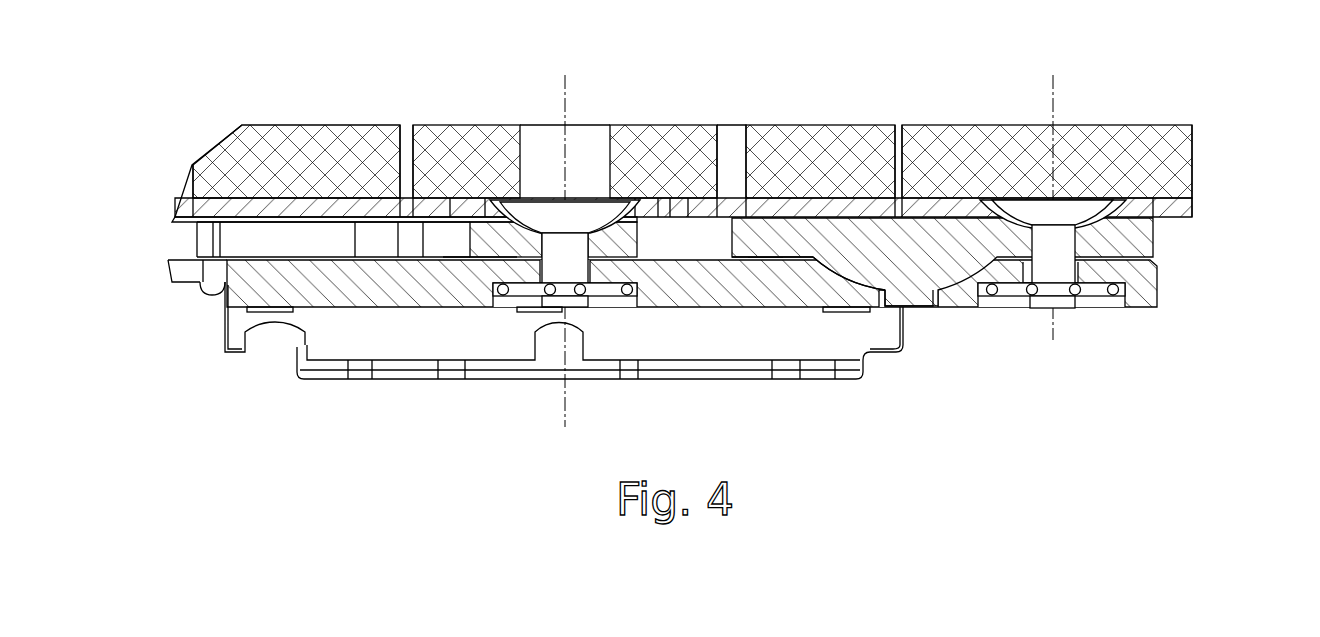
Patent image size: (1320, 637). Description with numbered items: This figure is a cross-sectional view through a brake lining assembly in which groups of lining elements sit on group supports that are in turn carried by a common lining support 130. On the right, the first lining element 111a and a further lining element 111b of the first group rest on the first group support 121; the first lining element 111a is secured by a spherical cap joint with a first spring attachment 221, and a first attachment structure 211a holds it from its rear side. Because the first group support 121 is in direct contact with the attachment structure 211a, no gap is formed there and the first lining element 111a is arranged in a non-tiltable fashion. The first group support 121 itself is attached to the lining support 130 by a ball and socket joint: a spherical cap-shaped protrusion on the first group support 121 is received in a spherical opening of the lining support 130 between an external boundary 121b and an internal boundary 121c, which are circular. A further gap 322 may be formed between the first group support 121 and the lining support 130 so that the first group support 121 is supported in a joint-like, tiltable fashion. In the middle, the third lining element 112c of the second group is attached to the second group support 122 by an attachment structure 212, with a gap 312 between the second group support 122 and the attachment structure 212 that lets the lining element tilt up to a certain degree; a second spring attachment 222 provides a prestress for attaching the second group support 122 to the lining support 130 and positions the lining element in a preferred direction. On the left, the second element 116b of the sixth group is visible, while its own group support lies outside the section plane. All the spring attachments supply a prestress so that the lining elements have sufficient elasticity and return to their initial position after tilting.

The first lining element 111a is at (1165, 150).
The lining element of the first group 111b is at (830, 138).
The third lining element 112c is at (465, 138).
The second element of the sixth group 116b is at (283, 138).
The first group support 121 is at (878, 232).
The external boundary 121b is at (814, 268).
The internal boundary 121c is at (935, 316).
The second group support 122 is at (618, 242).
The lining support 130 is at (697, 285).
The first attachment structure 211a is at (1177, 208).
The attachment structure 212 is at (528, 225).
The first spring attachment 221 is at (1013, 304).
The second spring attachment 222 is at (527, 304).
The gap 312 is at (162, 220).
The further gap 322 is at (724, 258).